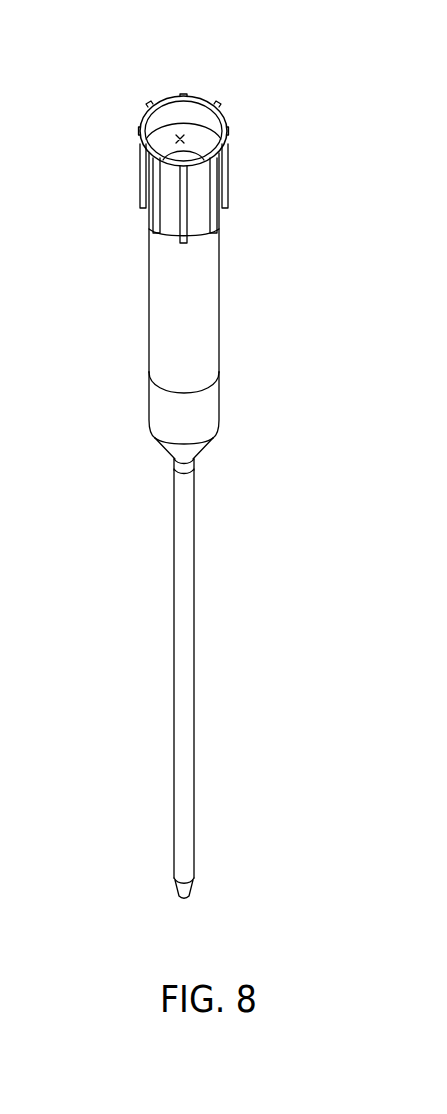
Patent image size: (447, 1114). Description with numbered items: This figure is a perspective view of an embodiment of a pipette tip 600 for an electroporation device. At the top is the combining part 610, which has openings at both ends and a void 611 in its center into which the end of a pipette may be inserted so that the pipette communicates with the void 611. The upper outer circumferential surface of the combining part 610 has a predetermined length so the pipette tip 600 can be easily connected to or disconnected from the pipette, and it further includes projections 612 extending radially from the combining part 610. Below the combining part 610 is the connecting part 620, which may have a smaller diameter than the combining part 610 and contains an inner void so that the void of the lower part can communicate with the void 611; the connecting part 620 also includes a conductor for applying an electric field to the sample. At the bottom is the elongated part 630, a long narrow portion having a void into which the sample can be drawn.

The pipette tip 600 is at (262, 152).
The combining part 610 is at (210, 290).
The void 611 is at (181, 134).
The projections 612 is at (142, 207).
The connecting part 620 is at (229, 365).
The elongated part 630 is at (188, 626).